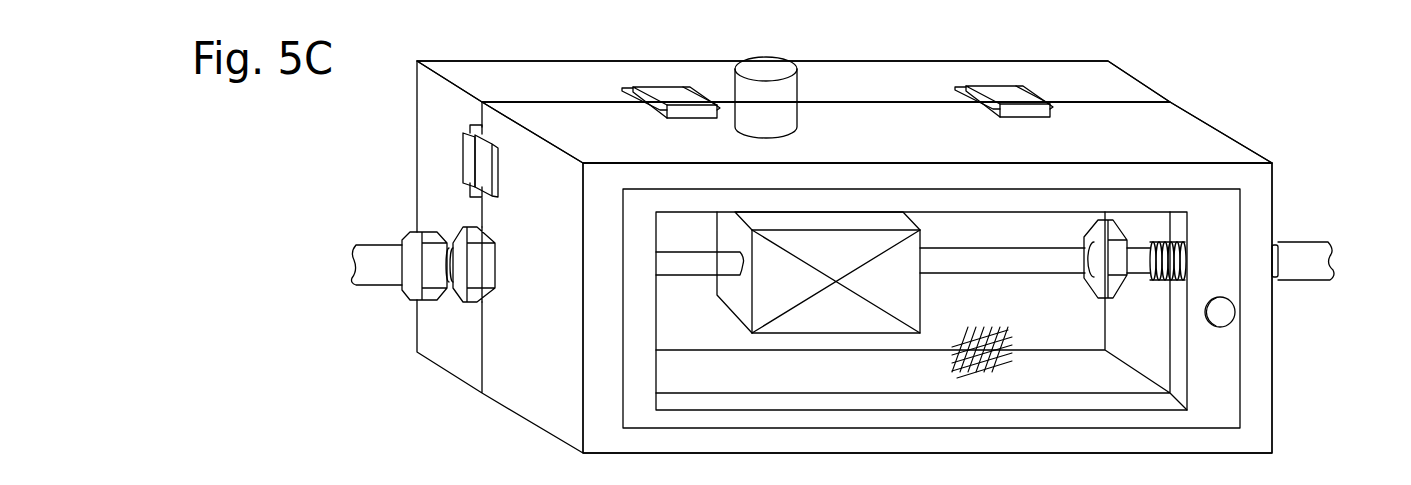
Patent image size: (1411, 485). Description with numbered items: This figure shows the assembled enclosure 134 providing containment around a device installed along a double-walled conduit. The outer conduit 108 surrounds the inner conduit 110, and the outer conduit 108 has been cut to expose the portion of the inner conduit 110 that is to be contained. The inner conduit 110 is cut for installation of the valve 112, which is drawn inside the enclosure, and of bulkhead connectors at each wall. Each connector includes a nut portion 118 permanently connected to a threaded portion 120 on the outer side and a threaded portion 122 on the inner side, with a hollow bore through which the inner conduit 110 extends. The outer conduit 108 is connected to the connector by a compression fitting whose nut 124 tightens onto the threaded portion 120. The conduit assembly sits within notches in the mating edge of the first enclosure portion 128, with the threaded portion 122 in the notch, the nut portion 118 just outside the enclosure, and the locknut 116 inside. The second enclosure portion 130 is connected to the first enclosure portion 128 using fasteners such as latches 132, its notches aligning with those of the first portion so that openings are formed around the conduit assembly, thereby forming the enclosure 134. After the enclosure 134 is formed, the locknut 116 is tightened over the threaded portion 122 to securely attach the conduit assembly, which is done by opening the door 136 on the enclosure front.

The outer conduit 108 is at (381, 255).
The inner conduit 110 is at (975, 265).
The valve 112 is at (851, 324).
The locknut 116 is at (1110, 293).
The nut portion 118 is at (473, 290).
The threaded portion 120 is at (453, 243).
The threaded portion 122 is at (1170, 280).
The nut 124 is at (428, 288).
The first enclosure portion 128 is at (1107, 83).
The second enclosure portion 130 is at (1188, 137).
The latch 132 is at (992, 90).
The enclosure 134 is at (1300, 103).
The door 136 is at (1223, 357).